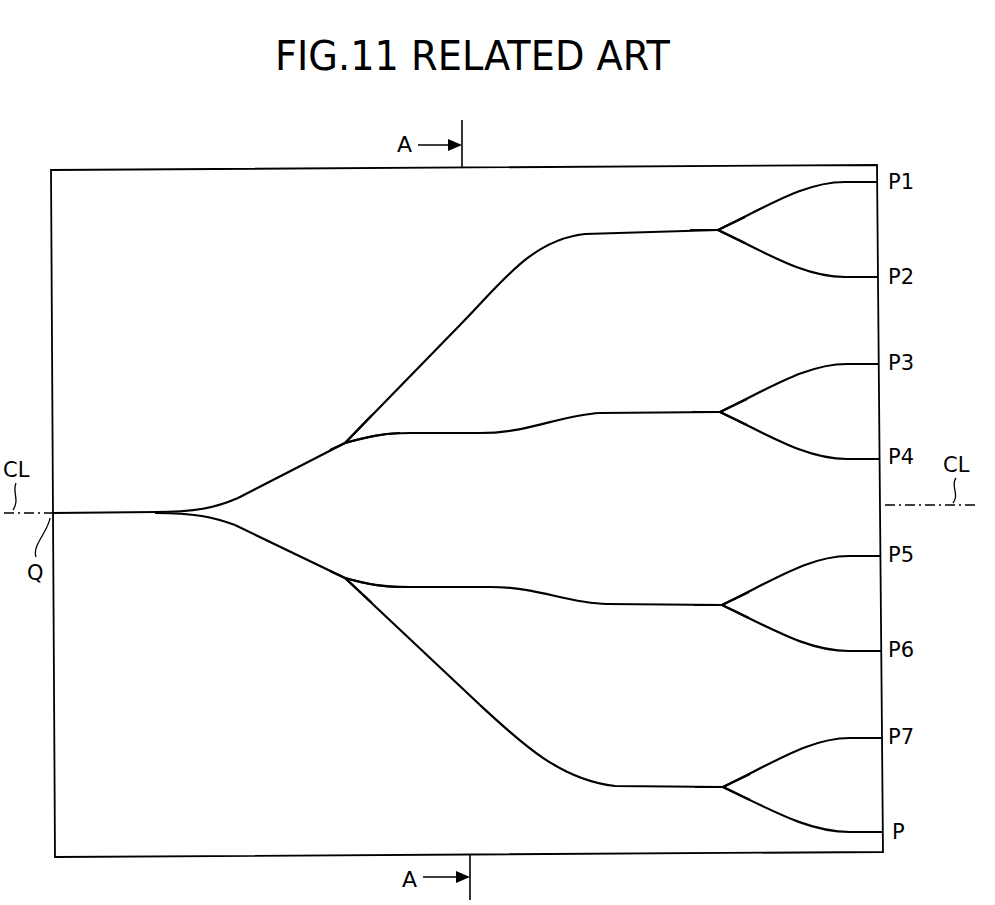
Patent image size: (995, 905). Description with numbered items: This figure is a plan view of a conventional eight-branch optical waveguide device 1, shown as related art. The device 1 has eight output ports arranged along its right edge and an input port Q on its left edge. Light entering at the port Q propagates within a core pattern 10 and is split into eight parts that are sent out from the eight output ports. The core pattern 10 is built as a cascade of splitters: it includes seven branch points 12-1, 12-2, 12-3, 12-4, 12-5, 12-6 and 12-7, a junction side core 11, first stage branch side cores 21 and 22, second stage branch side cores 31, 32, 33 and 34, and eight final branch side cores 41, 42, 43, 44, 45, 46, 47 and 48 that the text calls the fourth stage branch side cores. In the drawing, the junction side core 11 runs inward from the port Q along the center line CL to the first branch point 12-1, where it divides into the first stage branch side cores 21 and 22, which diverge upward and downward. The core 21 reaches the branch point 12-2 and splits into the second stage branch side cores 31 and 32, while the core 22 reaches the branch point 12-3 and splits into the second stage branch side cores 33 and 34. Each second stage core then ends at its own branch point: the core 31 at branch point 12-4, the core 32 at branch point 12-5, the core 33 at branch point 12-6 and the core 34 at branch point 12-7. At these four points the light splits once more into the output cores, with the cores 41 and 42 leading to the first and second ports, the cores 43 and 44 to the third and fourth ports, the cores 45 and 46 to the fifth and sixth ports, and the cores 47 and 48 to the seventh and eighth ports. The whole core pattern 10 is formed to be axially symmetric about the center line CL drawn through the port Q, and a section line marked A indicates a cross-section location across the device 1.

The 8-branch optical waveguide device 1 is at (775, 84).
The core pattern 10 is at (124, 478).
The junction side core 11 is at (84, 510).
The branch point 12-1 is at (155, 510).
The branch point 12-2 is at (345, 442).
The branch point 12-3 is at (345, 580).
The branch point 12-4 is at (718, 228).
The branch point 12-5 is at (720, 412).
The branch point 12-6 is at (722, 603).
The branch point 12-7 is at (723, 786).
The first stage branch side core 21 is at (277, 478).
The first stage branch side core 22 is at (285, 552).
The second stage branch side core 31 is at (470, 318).
The second stage branch side core 32 is at (597, 412).
The second stage branch side core 33 is at (650, 602).
The second stage branch side core 34 is at (485, 715).
The fourth stage branch side core 41 is at (840, 180).
The fourth stage branch side core 42 is at (810, 267).
The fourth stage branch side core 43 is at (858, 363).
The fourth stage branch side core 44 is at (812, 454).
The fourth stage branch side core 45 is at (858, 555).
The fourth stage branch side core 46 is at (812, 648).
The fourth stage branch side core 47 is at (861, 738).
The fourth stage branch side core 48 is at (823, 834).